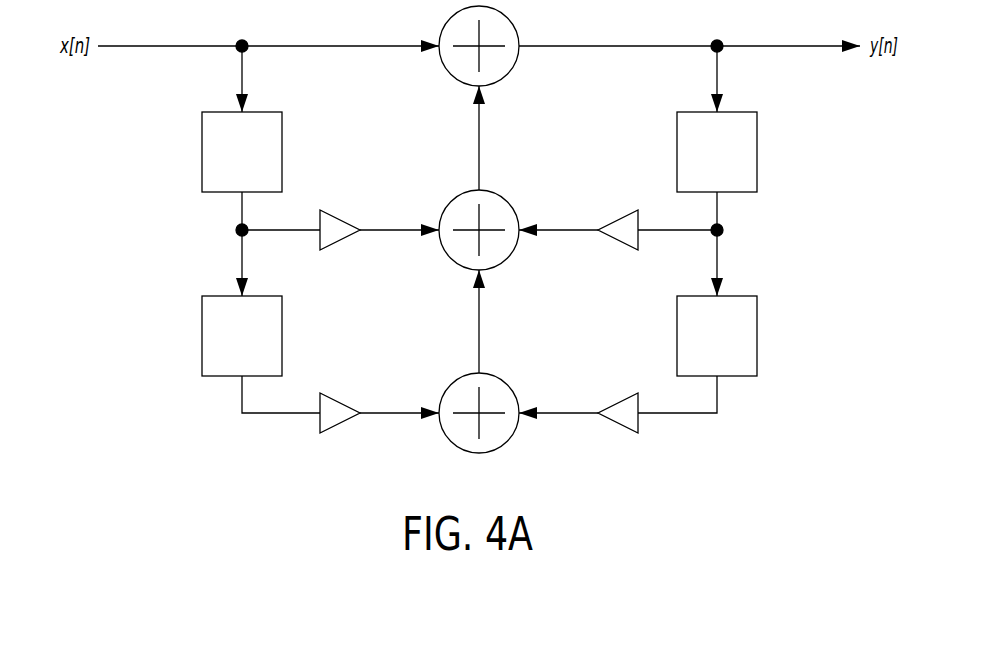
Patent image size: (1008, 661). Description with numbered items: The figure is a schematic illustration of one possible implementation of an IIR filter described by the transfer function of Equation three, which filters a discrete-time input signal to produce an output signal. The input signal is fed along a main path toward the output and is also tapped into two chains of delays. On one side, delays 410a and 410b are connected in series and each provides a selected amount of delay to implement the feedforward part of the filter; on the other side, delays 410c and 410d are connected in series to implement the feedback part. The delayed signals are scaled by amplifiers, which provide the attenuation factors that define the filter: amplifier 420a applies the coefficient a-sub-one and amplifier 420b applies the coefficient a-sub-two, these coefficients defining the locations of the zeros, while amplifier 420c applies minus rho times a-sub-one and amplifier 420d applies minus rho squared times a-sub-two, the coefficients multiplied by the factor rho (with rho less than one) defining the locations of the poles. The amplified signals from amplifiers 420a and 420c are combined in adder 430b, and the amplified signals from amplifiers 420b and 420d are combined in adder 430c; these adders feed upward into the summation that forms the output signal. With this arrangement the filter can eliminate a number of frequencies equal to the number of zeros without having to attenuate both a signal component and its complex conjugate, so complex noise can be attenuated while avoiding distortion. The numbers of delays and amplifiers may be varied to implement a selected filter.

The delay 410a is at (202, 155).
The delay 410b is at (202, 333).
The delay 410c is at (757, 148).
The delay 410d is at (757, 335).
The amplifier 420a is at (326, 208).
The amplifier 420b is at (326, 392).
The amplifier 420c is at (636, 210).
The amplifier 420d is at (636, 394).
The adder 430b is at (503, 195).
The adder 430c is at (503, 377).